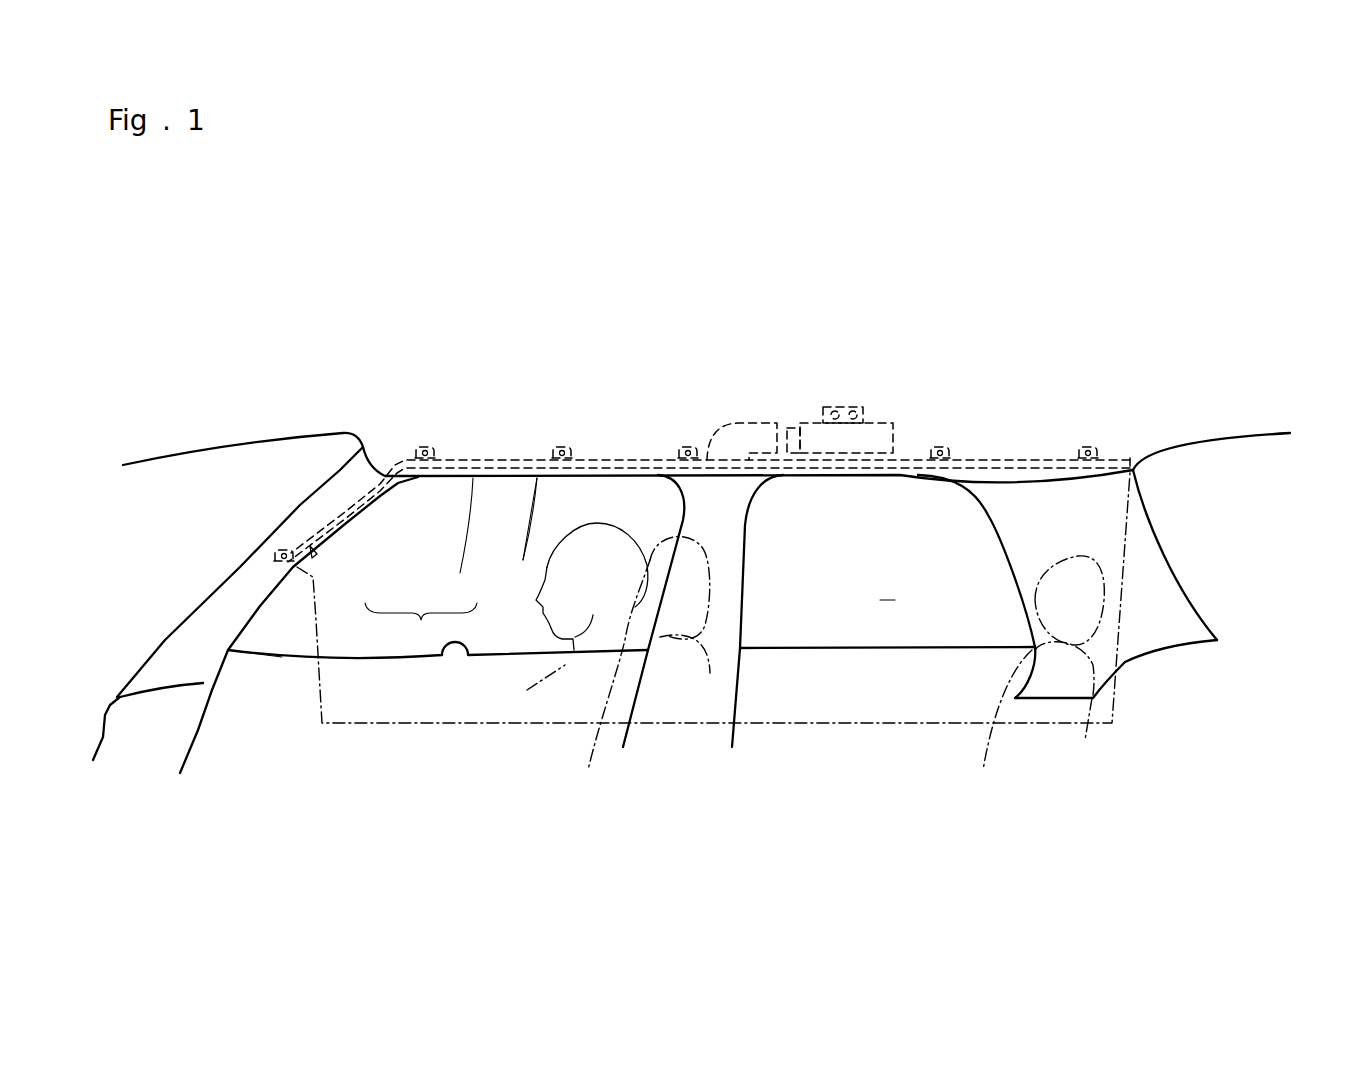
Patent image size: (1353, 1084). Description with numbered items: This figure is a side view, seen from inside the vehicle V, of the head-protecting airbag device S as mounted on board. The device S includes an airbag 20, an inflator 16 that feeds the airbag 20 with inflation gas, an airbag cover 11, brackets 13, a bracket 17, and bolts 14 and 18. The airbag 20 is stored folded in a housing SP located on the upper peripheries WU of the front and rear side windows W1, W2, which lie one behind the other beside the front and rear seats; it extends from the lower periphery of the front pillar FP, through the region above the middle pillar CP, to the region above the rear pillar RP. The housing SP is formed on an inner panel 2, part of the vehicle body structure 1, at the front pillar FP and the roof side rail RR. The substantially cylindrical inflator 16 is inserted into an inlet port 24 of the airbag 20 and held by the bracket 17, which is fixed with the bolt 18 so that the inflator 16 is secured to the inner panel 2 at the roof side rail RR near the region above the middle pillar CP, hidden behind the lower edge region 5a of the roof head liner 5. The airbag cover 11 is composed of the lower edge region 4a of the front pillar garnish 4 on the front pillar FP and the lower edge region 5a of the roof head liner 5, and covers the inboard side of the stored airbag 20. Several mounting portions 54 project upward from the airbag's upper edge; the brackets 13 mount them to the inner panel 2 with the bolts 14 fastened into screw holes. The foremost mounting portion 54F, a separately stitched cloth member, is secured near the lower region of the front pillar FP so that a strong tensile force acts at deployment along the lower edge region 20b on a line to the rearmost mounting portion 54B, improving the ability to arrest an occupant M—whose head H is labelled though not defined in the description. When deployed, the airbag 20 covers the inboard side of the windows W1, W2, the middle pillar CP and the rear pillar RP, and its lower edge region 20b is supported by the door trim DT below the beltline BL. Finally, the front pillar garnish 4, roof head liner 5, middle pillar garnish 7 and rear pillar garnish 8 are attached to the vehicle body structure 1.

The vehicle V is at (237, 284).
The vehicle body structure 1 is at (699, 347).
The inner panel 2 is at (330, 375).
The front pillar garnish 4 is at (267, 553).
The lower edge region of front pillar garnish 4a is at (364, 507).
The roof head liner 5 is at (506, 453).
The lower edge region of roof head liner 5a is at (454, 541).
The middle pillar garnish 7 is at (720, 648).
The rear pillar garnish 8 is at (1140, 550).
The airbag cover 11 is at (421, 626).
The brackets 13 is at (664, 431).
The bolts 14 is at (283, 545).
The inflator 16 is at (808, 369).
The bracket 17 is at (838, 440).
The bolt 18 is at (856, 407).
The airbag 20 is at (1011, 593).
The lower edge region of airbag 20b is at (1040, 713).
The inlet port 24 is at (735, 440).
The mounting portions 54 is at (422, 450).
The foremost mounting portion 54F is at (270, 565).
The rearmost mounting portion 54B is at (1105, 450).
The head-protecting airbag device S is at (667, 397).
The housing SP is at (505, 458).
The front pillar FP is at (239, 553).
The middle pillar CP is at (758, 628).
The rear pillar RP is at (1120, 554).
The roof side rail RR is at (759, 443).
The occupant head H is at (605, 538).
The occupant M is at (587, 590).
The upper peripheries of windows WU is at (512, 539).
The front side window W1 is at (282, 657).
The rear side window W2 is at (888, 628).
The beltline BL is at (440, 657).
The door trim DT is at (375, 677).